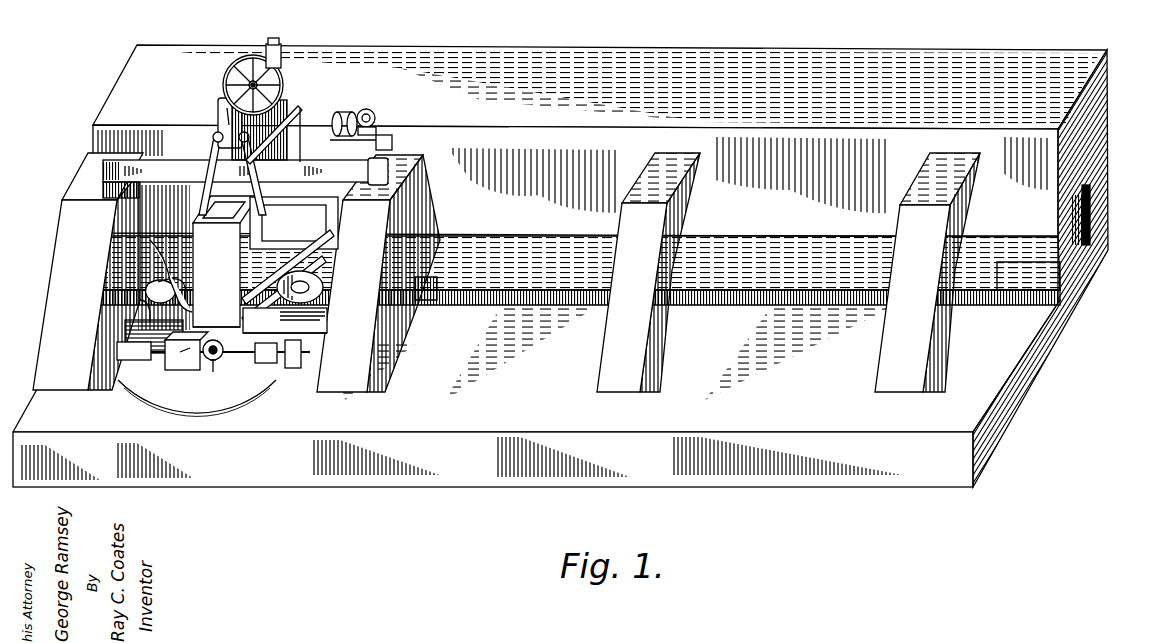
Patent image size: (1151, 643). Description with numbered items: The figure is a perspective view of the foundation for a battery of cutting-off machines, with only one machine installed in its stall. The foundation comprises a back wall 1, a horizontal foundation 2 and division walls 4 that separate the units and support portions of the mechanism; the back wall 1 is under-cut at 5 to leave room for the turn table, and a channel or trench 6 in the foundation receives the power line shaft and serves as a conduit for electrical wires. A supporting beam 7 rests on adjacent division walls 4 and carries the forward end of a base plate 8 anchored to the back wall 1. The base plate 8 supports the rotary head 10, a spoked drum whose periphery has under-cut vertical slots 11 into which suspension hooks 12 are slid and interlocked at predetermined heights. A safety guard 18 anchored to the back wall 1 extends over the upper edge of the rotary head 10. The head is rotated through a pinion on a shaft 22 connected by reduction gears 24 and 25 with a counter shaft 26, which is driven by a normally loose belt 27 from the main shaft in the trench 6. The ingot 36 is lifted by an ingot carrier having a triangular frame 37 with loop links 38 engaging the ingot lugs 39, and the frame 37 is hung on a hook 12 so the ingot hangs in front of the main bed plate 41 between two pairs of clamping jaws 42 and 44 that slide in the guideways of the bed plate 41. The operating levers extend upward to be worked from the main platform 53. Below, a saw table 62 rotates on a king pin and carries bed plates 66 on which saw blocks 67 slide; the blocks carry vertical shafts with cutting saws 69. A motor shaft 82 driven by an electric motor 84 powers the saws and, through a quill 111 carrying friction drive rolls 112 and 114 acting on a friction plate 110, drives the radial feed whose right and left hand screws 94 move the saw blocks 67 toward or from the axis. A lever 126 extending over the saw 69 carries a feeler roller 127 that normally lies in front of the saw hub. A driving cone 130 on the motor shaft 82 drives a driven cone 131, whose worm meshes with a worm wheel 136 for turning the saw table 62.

The back wall 1 is at (575, 181).
The horizontal foundation 2 is at (560, 268).
The division walls 4 is at (506, 272).
The under-cut 5 is at (1116, 213).
The channel or trench 6 is at (437, 297).
The supporting beam 7 is at (241, 179).
The base plate 8 is at (296, 115).
The rotary head 10 is at (228, 70).
The under-cut vertical slots 11 is at (290, 118).
The suspension hooks 12 is at (331, 171).
The safety guard 18 is at (278, 46).
The shaft 22 is at (333, 112).
The reduction gear 24 is at (368, 108).
The reduction gear 25 is at (392, 140).
The counter shaft 26 is at (373, 105).
The belt 27 is at (376, 113).
The ingot 36 is at (225, 261).
The triangular frame 37 is at (218, 123).
The loop links 38 is at (207, 168).
The ingot lugs 39 is at (216, 290).
The main bed plate 41 is at (328, 213).
The clamping jaws 42 is at (268, 268).
The clamping jaws 44 is at (268, 243).
The main platform 53 is at (792, 82).
The saw table 62 is at (222, 358).
The bed plates 66 is at (275, 318).
The saw blocks 67 is at (303, 310).
The cutting saws 69 is at (305, 283).
The motor shaft 82 is at (232, 352).
The electric motor 84 is at (300, 362).
The right and left hand screws 94 is at (266, 345).
The friction plate 110 is at (200, 350).
The quill 111 is at (213, 360).
The friction drive roll 112 is at (188, 350).
The friction drive roll 114 is at (213, 362).
The lever 126 is at (185, 270).
The feeler roller 127 is at (143, 297).
The driving cone 130 is at (172, 345).
The driven cone 131 is at (150, 322).
The worm wheel 136 is at (150, 404).